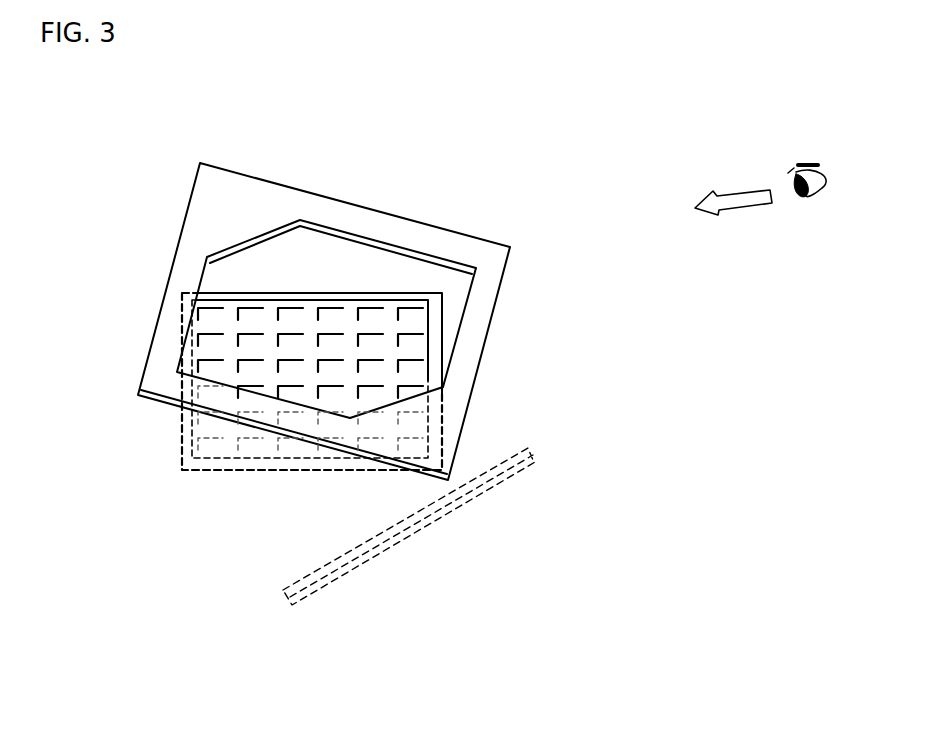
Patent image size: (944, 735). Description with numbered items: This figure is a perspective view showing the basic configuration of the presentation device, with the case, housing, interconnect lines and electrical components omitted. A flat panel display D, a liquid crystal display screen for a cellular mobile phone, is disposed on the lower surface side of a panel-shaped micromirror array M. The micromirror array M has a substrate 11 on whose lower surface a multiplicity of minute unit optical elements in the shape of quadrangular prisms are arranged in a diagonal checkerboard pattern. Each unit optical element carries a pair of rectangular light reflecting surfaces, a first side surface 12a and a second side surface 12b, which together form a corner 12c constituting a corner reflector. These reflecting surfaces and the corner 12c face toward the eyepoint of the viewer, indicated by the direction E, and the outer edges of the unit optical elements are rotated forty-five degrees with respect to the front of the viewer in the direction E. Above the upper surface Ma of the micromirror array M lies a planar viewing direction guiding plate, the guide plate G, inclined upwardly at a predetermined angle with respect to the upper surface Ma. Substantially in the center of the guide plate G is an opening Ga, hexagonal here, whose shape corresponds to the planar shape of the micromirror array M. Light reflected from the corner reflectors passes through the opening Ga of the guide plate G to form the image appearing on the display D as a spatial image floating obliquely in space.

The guide plate G is at (164, 262).
The opening Ga is at (296, 222).
The micromirror array M is at (237, 481).
The upper surface Ma is at (351, 330).
The substrate 11 is at (182, 442).
The first side surface 12a is at (421, 320).
The second side surface 12b is at (445, 389).
The corner 12c is at (430, 387).
The flat panel display D is at (452, 525).
The viewing direction E is at (760, 205).